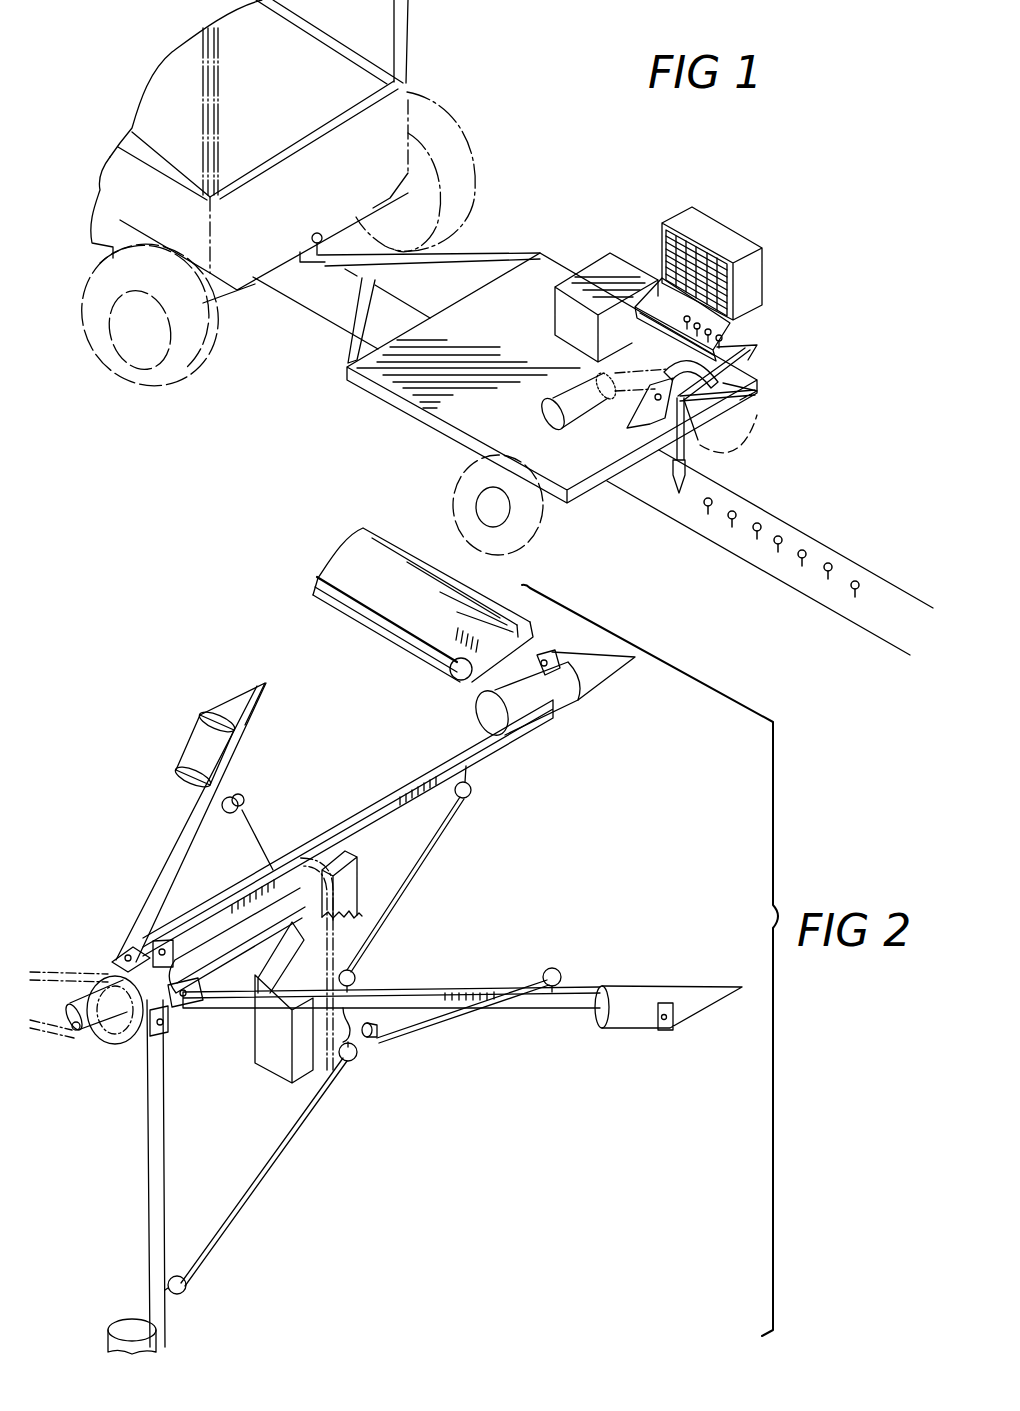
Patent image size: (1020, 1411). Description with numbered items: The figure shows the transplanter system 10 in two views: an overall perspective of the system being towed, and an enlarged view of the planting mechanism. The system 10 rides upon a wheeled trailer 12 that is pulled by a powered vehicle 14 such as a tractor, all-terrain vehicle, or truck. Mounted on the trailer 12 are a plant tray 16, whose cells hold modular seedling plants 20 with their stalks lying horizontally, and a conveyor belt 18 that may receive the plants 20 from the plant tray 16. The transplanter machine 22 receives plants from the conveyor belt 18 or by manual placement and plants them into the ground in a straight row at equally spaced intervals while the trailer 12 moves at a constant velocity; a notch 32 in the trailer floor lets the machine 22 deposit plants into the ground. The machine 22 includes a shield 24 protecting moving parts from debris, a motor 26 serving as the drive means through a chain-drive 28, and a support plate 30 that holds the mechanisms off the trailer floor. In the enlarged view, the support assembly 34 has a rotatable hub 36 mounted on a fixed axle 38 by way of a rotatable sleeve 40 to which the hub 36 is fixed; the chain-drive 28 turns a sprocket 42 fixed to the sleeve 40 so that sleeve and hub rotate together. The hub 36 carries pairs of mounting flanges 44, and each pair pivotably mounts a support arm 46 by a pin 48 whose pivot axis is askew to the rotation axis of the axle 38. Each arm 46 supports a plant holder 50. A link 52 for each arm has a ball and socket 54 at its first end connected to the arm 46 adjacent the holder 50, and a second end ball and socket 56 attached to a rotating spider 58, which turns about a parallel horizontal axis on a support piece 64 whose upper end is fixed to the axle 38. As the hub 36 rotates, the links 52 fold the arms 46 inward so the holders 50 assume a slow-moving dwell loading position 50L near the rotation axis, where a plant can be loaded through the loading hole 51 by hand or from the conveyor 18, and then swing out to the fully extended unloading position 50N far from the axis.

In FIG. 1, the transplanter system 10 is at (617, 460).
In FIG. 1, the trailer 12 is at (547, 268).
In FIG. 1, the powered vehicle 14 is at (400, 100).
In FIG. 1, the plant tray 16 is at (718, 237).
In FIG. 1, the conveyor belt 18 is at (649, 300).
In FIG. 2, the conveyor belt 18 is at (342, 567).
In FIG. 1, the modular seedling plants 20 is at (733, 333).
In FIG. 1, the transplanter machine 22 is at (749, 419).
In FIG. 2, the transplanter machine 22 is at (426, 1165).
In FIG. 1, the shield 24 is at (598, 345).
In FIG. 1, the motor 26 is at (546, 407).
In FIG. 1, the chain-drive 28 is at (617, 393).
In FIG. 2, the chain-drive 28 is at (47, 1040).
In FIG. 1, the support plate 30 is at (622, 432).
In FIG. 1, the notch 32 is at (717, 430).
In FIG. 2, the support assembly 34 is at (115, 948).
In FIG. 2, the rotatable hub 36 is at (170, 1034).
In FIG. 2, the axle 38 is at (98, 1035).
In FIG. 2, the rotatable sleeve 40 is at (240, 885).
In FIG. 2, the sprocket 42 is at (115, 1044).
In FIG. 2, the mounting flanges 44 is at (192, 990).
In FIG. 2, the support arm 46 is at (420, 990).
In FIG. 2, the pin 48 is at (140, 945).
In FIG. 2, the plant holder 50 is at (650, 987).
In FIG. 2, the loading position 50L is at (552, 708).
In FIG. 2, the unloading position 50N is at (130, 1318).
In FIG. 2, the loading hole 51 is at (490, 687).
In FIG. 2, the link 52 is at (407, 880).
In FIG. 2, the ball and socket 54 is at (471, 794).
In FIG. 2, the second end ball and socket 56 is at (357, 1063).
In FIG. 2, the rotating spider 58 is at (362, 1040).
In FIG. 2, the support piece 64 is at (352, 893).